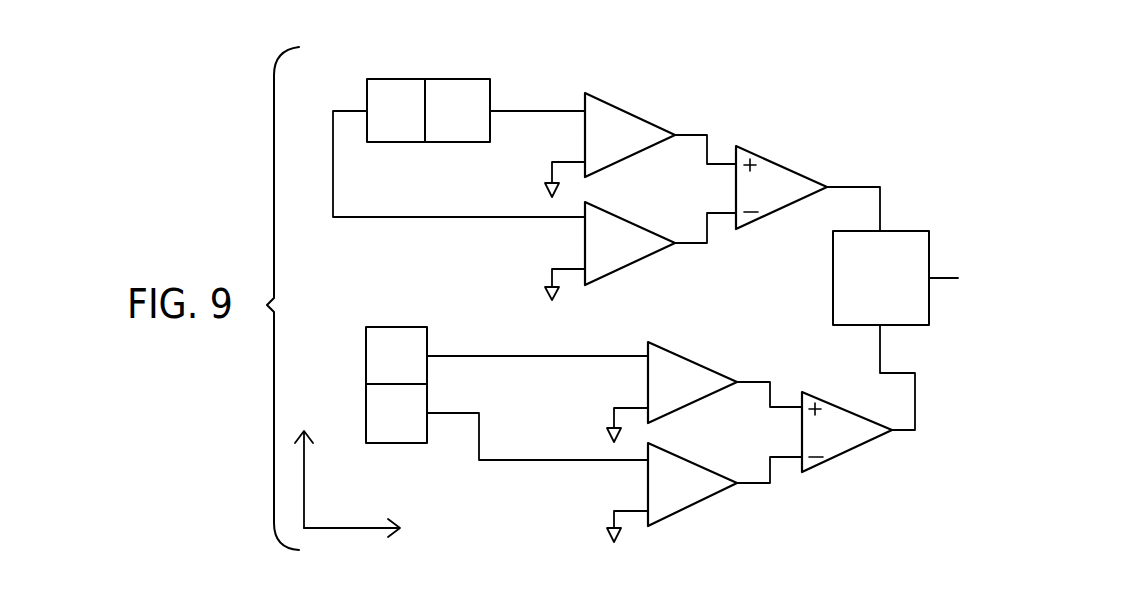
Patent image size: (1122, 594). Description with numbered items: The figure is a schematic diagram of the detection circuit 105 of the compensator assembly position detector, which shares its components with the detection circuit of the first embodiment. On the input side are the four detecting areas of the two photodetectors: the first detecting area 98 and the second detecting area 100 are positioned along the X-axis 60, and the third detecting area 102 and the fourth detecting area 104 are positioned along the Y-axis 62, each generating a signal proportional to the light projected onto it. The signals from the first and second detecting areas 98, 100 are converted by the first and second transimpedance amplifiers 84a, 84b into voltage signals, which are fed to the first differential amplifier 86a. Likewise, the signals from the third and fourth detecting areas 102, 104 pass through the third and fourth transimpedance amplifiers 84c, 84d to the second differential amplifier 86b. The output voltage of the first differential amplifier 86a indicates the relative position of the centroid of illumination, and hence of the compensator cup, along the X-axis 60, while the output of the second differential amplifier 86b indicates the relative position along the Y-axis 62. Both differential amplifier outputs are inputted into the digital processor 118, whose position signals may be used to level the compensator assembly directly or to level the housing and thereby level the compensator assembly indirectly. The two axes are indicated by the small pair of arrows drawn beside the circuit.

The detection circuit 105 is at (258, 167).
The second detecting area 100 is at (420, 123).
The first detecting area 98 is at (474, 123).
The third detecting area 102 is at (420, 370).
The fourth detecting area 104 is at (420, 425).
The first transimpedance amplifier 84a is at (642, 147).
The second transimpedance amplifier 84b is at (642, 255).
The third transimpedance amplifier 84c is at (703, 394).
The fourth transimpedance amplifier 84d is at (703, 496).
The first differential amplifier 86a is at (808, 188).
The second differential amplifier 86b is at (855, 442).
The digital processor 118 is at (899, 291).
The Y-axis 62 is at (304, 460).
The X-axis 60 is at (385, 524).